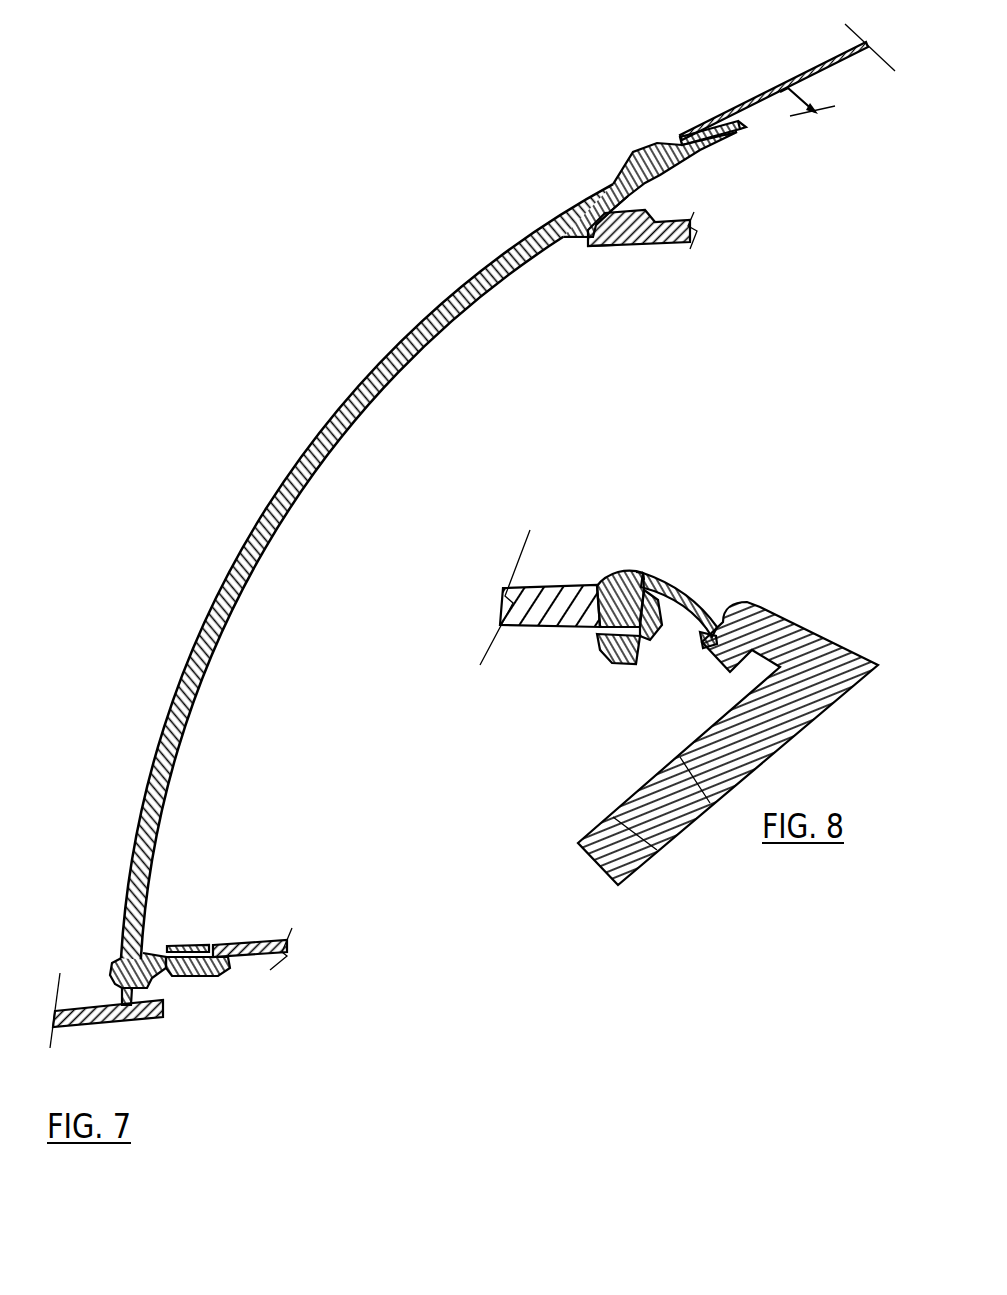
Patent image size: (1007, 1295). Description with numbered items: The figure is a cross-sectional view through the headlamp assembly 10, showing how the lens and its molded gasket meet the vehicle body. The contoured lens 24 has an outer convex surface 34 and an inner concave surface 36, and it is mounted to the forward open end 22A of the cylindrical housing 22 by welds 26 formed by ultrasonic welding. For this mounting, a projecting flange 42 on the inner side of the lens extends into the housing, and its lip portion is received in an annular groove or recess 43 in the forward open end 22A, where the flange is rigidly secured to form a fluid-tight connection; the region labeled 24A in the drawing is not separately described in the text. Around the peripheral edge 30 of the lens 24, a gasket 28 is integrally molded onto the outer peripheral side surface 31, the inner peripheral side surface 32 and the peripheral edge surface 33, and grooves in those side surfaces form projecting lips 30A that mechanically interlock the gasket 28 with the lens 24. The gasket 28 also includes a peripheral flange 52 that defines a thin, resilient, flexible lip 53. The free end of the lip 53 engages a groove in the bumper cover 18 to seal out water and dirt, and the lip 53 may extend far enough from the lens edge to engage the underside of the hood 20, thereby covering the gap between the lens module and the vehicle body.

In FIG. 7, the headlamp assembly 10 is at (461, 543).
In FIG. 7, the bumper cover 18 is at (140, 1012).
In FIG. 8, the bumper cover 18 is at (790, 630).
In FIG. 7, the hood 20 is at (760, 105).
In FIG. 7, the cylindrical housing 22 is at (680, 234).
In FIG. 7, the forward open end 22A is at (606, 248).
In FIG. 7, the contoured lens 24 is at (349, 580).
In FIG. 8, the contoured lens 24 is at (548, 580).
In FIG. 7, the end portion of curved panel 24A is at (207, 899).
In FIG. 7, the welds 26 is at (620, 207).
In FIG. 7, the gasket 28 is at (425, 529).
In FIG. 8, the gasket 28 is at (659, 598).
In FIG. 7, the peripheral edge 30 is at (445, 564).
In FIG. 8, the peripheral edge 30 is at (659, 598).
In FIG. 8, the projecting lips 30A is at (644, 571).
In FIG. 8, the outer peripheral side surface 31 is at (627, 595).
In FIG. 8, the inner peripheral side surface 32 is at (605, 660).
In FIG. 8, the peripheral edge surface 33 is at (657, 628).
In FIG. 7, the outer convex surface 34 is at (147, 798).
In FIG. 7, the inner concave surface 36 is at (182, 754).
In FIG. 7, the projecting flange 42 is at (152, 950).
In FIG. 7, the annular groove 43 is at (205, 943).
In FIG. 7, the peripheral flange 52 is at (697, 143).
In FIG. 8, the peripheral flange 52 is at (695, 602).
In FIG. 7, the flexible lip 53 is at (745, 128).
In FIG. 8, the flexible lip 53 is at (707, 644).